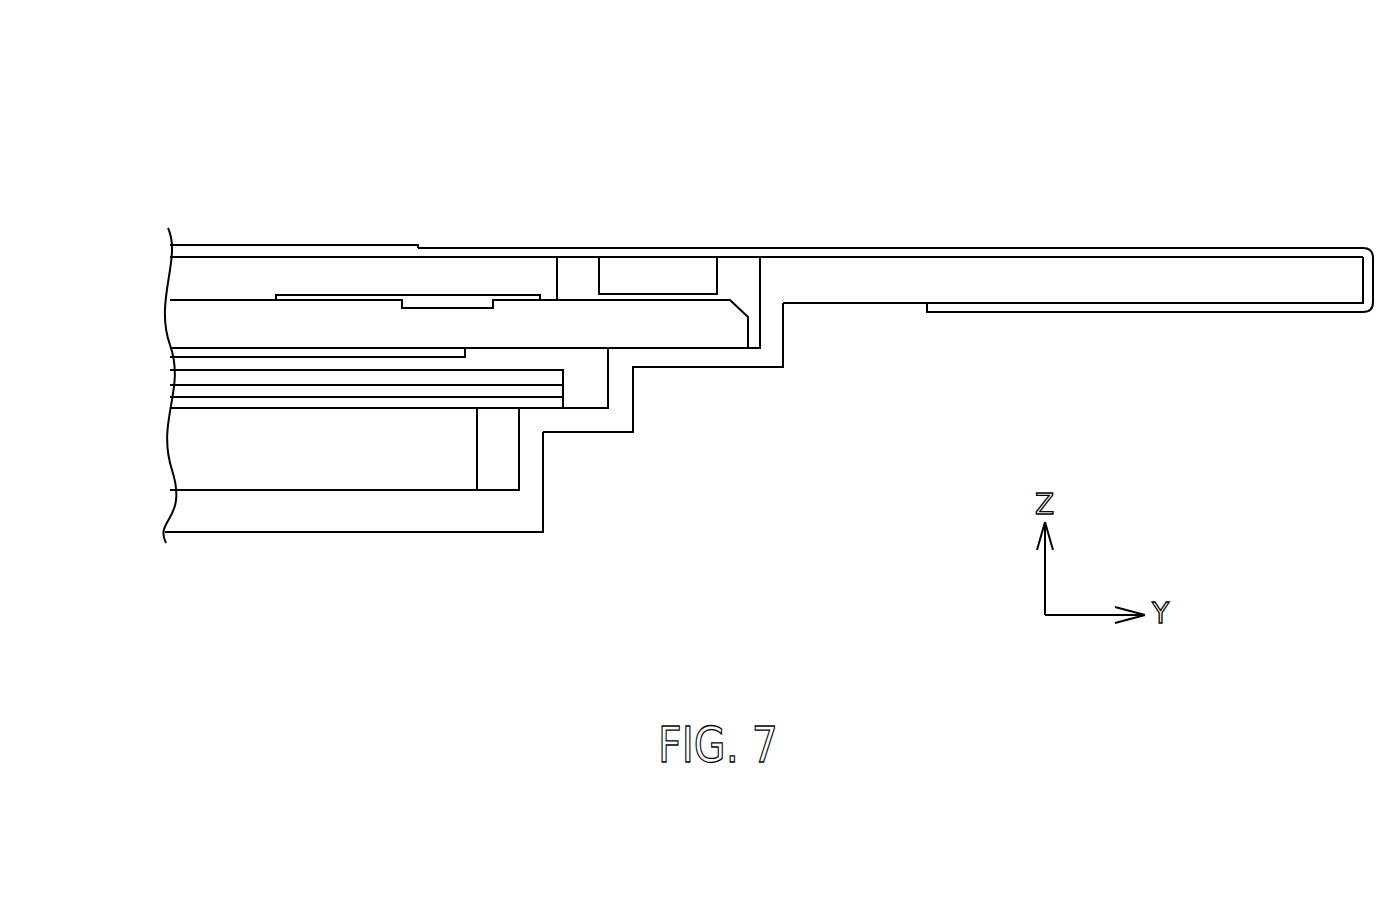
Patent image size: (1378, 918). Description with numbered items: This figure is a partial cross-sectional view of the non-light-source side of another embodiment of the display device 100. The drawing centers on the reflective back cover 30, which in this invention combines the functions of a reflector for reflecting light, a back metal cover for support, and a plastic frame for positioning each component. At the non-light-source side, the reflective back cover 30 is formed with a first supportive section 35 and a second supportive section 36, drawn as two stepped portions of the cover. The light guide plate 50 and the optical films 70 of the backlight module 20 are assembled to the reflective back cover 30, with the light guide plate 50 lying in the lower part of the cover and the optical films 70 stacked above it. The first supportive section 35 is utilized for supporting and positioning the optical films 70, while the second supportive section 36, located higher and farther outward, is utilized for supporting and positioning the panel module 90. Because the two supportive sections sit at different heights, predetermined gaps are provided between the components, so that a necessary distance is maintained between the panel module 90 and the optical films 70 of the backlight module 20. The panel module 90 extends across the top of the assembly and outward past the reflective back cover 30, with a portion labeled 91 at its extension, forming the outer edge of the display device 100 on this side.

The display device 100 is at (1192, 104).
The backlight module 20 is at (142, 533).
The reflective back cover 30 is at (393, 520).
The first supportive section 35 is at (588, 422).
The second supportive section 36 is at (707, 357).
The light guide plate 50 is at (275, 465).
The optical films 70 is at (207, 392).
The panel module 90 is at (380, 275).
The extension portion of cover plate 91 is at (935, 254).